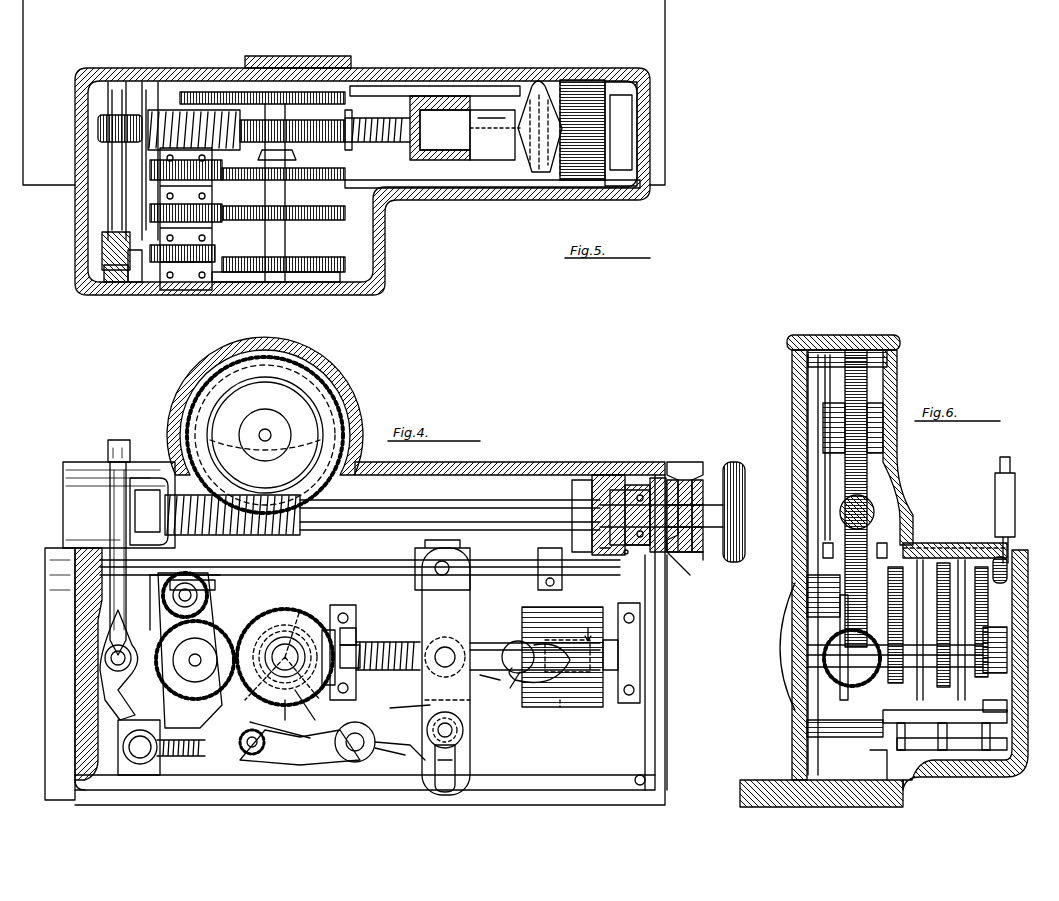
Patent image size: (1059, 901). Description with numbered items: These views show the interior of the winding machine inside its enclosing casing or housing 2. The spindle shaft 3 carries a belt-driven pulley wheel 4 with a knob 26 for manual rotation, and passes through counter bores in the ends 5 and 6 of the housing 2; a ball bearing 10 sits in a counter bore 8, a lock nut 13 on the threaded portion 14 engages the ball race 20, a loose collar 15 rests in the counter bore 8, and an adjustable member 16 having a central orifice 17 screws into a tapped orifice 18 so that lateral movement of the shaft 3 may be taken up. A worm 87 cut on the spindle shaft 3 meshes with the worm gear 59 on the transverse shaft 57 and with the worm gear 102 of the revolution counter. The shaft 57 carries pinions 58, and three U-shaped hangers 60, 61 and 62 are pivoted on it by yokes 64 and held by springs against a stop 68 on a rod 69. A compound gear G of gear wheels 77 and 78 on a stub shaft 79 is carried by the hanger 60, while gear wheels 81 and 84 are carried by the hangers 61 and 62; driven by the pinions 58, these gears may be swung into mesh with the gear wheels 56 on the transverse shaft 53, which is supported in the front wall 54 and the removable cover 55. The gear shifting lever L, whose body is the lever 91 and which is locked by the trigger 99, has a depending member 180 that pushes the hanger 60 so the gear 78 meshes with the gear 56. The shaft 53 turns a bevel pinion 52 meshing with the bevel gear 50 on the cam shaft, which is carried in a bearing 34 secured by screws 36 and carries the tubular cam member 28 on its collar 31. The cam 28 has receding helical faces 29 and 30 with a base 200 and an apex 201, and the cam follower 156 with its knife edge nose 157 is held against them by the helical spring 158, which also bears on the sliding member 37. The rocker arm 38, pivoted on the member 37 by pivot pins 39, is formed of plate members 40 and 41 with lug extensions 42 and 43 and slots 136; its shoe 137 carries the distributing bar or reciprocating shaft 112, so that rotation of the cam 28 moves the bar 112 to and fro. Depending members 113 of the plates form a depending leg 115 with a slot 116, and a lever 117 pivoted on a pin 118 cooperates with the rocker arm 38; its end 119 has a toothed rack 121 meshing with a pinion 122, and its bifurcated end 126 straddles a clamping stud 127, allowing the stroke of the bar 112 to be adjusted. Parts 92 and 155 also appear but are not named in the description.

In FIG. 4, the enclosing casing or housing 2 is at (470, 475).
In FIG. 6, the enclosing casing or housing 2 is at (840, 335).
In FIG. 4, the spindle shaft 3 is at (500, 500).
In FIG. 6, the spindle shaft 3 is at (873, 505).
In FIG. 4, the pulley wheel 4 is at (698, 480).
In FIG. 4, the end of housing 5 is at (77, 678).
In FIG. 4, the end of housing 6 is at (655, 678).
In FIG. 4, the counter bore 8 is at (622, 554).
In FIG. 4, the ball bearing 10 is at (660, 580).
In FIG. 4, the lock nut 13 is at (680, 560).
In FIG. 4, the threaded portion 14 is at (680, 465).
In FIG. 4, the collar 15 is at (636, 485).
In FIG. 4, the adjustable member 16 is at (604, 462).
In FIG. 4, the central orifice 17 is at (572, 486).
In FIG. 4, the tapped orifice 18 is at (612, 556).
In FIG. 4, the ball race 20 is at (658, 478).
In FIG. 4, the knob 26 is at (735, 462).
In FIG. 6, the knob 26 is at (753, 440).
In FIG. 5, the cam member 28 is at (585, 82).
In FIG. 4, the cam member 28 is at (580, 707).
In FIG. 5, the helical cam face 29 is at (570, 130).
In FIG. 5, the helical cam face 30 is at (542, 82).
In FIG. 4, the collar 31 is at (562, 690).
In FIG. 4, the bearing 34 is at (352, 618).
In FIG. 4, the screw 36 is at (626, 705).
In FIG. 5, the sliding member 37 is at (492, 140).
In FIG. 4, the rocker arm 38 is at (470, 642).
In FIG. 4, the pivot pin 39 is at (443, 648).
In FIG. 5, the rectangular plate member 40 is at (445, 98).
In FIG. 6, the rectangular plate member 40 is at (828, 545).
In FIG. 5, the rectangular plate member 41 is at (465, 160).
In FIG. 6, the rectangular plate member 41 is at (890, 545).
In FIG. 4, the lug extension 42 is at (462, 622).
In FIG. 4, the lug extension 43 is at (490, 682).
In FIG. 5, the bevel gear 50 is at (300, 92).
In FIG. 4, the bevel gear 50 is at (310, 700).
In FIG. 6, the bevel gear 50 is at (830, 670).
In FIG. 5, the bevel pinion 52 is at (262, 155).
In FIG. 4, the bevel pinion 52 is at (275, 690).
In FIG. 5, the transverse shaft 53 is at (372, 140).
In FIG. 4, the transverse shaft 53 is at (283, 650).
In FIG. 5, the front wall 54 is at (335, 70).
In FIG. 5, the rear removable cover 55 is at (385, 288).
In FIG. 4, the rear removable cover 55 is at (375, 670).
In FIG. 5, the gear wheel 56 is at (330, 258).
In FIG. 4, the gear wheel 56 is at (322, 630).
In FIG. 4, the transverse shaft 57 is at (197, 595).
In FIG. 5, the pinion 58 is at (165, 262).
In FIG. 4, the pinion 58 is at (180, 575).
In FIG. 6, the pinion 58 is at (982, 567).
In FIG. 5, the worm gear 59 is at (105, 130).
In FIG. 6, the worm gear 59 is at (830, 580).
In FIG. 4, the U-shaped hanger 60 is at (178, 706).
In FIG. 6, the U-shaped hanger 60 is at (990, 633).
In FIG. 6, the U-shaped hanger 61 is at (966, 618).
In FIG. 6, the U-shaped hanger 62 is at (845, 620).
In FIG. 5, the yoke 64 is at (198, 282).
In FIG. 4, the yoke 64 is at (208, 575).
In FIG. 4, the stop 68 is at (128, 730).
In FIG. 6, the stop 68 is at (930, 735).
In FIG. 4, the rod 69 is at (138, 748).
In FIG. 6, the rod 69 is at (1003, 745).
In FIG. 5, the gear wheel 77 is at (112, 258).
In FIG. 4, the gear wheel 77 is at (170, 650).
In FIG. 5, the gear wheel 78 is at (228, 280).
In FIG. 4, the stub shaft 79 is at (200, 656).
In FIG. 5, the gear wheel 81 is at (150, 195).
In FIG. 5, the gear wheel 84 is at (118, 160).
In FIG. 5, the worm portion 87 is at (170, 110).
In FIG. 4, the worm portion 87 is at (292, 530).
In FIG. 6, the lever body 91 is at (992, 656).
In FIG. 6, the collar 92 is at (990, 665).
In FIG. 4, the trigger 99 is at (115, 516).
In FIG. 5, the worm gear 102 is at (315, 140).
In FIG. 4, the worm gear 102 is at (318, 392).
In FIG. 6, the worm gear 102 is at (868, 395).
In FIG. 4, the distributing bar or reciprocating shaft 112 is at (370, 575).
In FIG. 6, the distributing bar or reciprocating shaft 112 is at (1007, 563).
In FIG. 6, the depending member 113 is at (840, 725).
In FIG. 4, the depending leg 115 is at (488, 770).
In FIG. 4, the slot 116 is at (448, 765).
In FIG. 4, the lever 117 is at (405, 757).
In FIG. 4, the pivot pin 118 is at (355, 762).
In FIG. 4, the lever end 119 is at (300, 762).
In FIG. 4, the teeth 121 is at (268, 760).
In FIG. 4, the pinion 122 is at (242, 748).
In FIG. 4, the bifurcated end 126 is at (462, 705).
In FIG. 4, the stud 127 is at (463, 730).
In FIG. 4, the slot 136 is at (450, 560).
In FIG. 4, the shoe 137 is at (540, 560).
In FIG. 6, the post 155 is at (882, 545).
In FIG. 4, the cam follower member 156 is at (532, 648).
In FIG. 4, the knife edge nose 157 is at (571, 650).
In FIG. 5, the helical spring 158 is at (372, 120).
In FIG. 4, the helical spring 158 is at (392, 642).
In FIG. 4, the depending member 180 is at (120, 700).
In FIG. 5, the base of cam face 200 is at (562, 150).
In FIG. 4, the apex of cam 201 is at (517, 681).
In FIG. 5, the gear shifting lever L is at (120, 270).
In FIG. 4, the gear shifting lever L is at (122, 480).
In FIG. 6, the gear shifting lever L is at (1005, 457).
In FIG. 4, the compound gear G is at (195, 653).